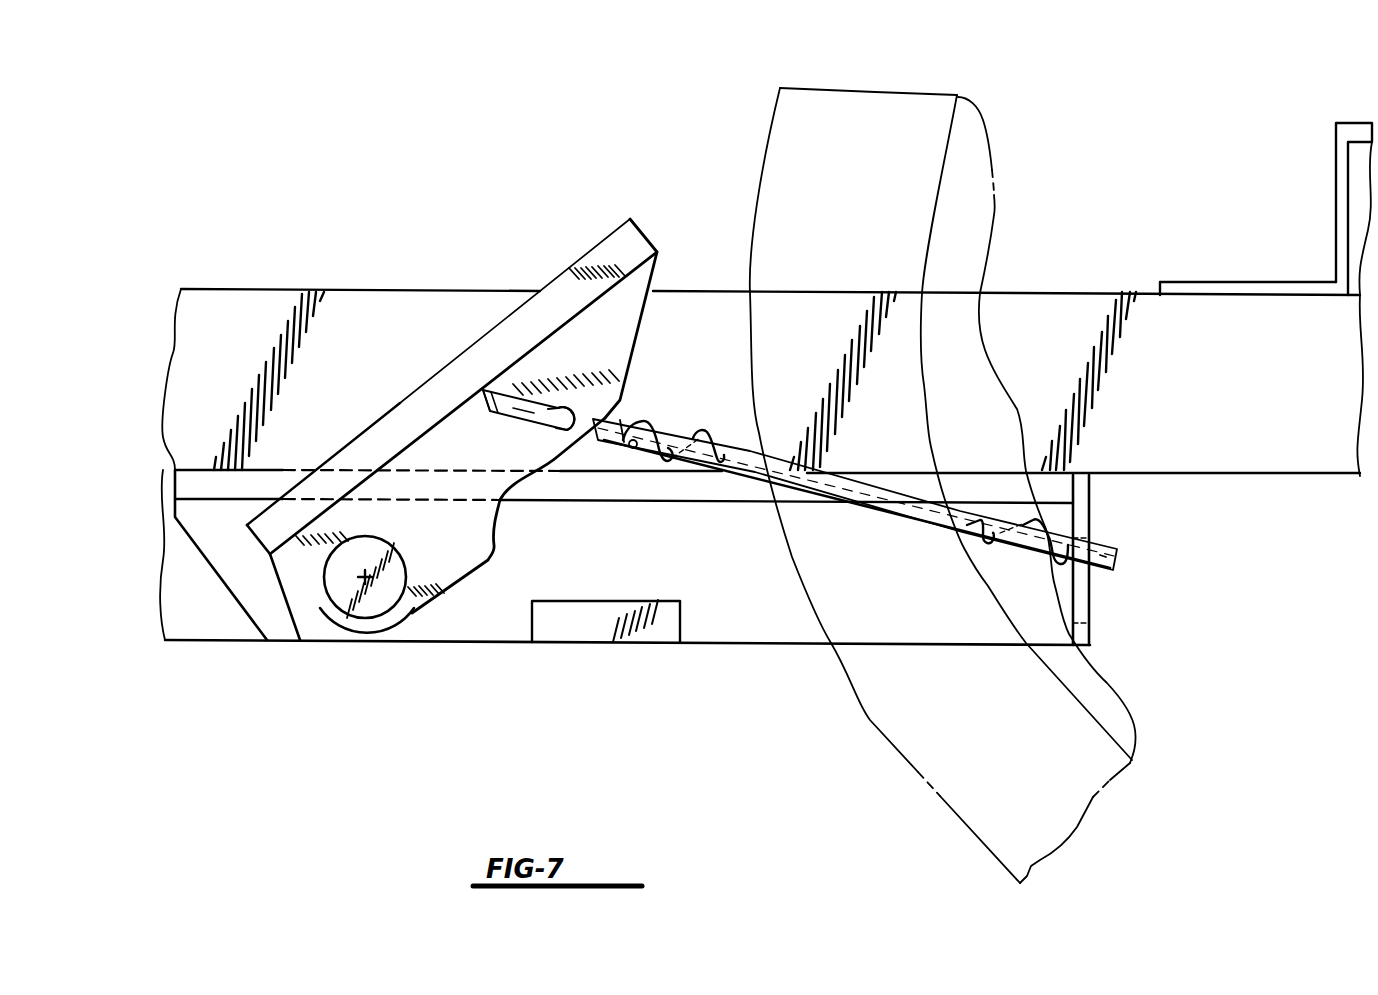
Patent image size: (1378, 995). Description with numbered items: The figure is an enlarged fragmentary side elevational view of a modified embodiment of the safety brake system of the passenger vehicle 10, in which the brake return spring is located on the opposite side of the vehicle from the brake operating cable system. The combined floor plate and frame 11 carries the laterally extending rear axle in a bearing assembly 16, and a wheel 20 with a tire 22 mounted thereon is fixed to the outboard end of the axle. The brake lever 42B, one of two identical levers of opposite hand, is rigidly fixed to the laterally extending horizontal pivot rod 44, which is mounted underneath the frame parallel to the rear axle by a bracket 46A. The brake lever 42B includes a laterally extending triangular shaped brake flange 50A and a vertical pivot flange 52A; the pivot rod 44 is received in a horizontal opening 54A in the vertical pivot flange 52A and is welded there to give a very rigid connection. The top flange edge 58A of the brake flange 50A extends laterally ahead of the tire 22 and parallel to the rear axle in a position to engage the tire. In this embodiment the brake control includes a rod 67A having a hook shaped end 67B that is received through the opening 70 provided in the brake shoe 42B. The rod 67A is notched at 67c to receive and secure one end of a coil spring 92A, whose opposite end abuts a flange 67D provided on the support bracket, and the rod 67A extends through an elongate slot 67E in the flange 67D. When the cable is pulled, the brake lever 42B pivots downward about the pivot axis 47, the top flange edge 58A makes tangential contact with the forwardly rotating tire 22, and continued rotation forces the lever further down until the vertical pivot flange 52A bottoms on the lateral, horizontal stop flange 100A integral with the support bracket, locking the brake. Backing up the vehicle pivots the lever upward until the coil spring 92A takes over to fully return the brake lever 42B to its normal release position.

The passenger vehicle 10 is at (742, 302).
The combined floor plate and frame 11 is at (318, 289).
The bearing assembly 16 is at (1338, 173).
The wheel 20 is at (942, 155).
The tire 22 is at (770, 113).
The brake lever 42B is at (586, 235).
The pivot rod 44 is at (352, 600).
The bracket 46A is at (190, 575).
The pivot axis 47 is at (373, 590).
The brake flange 50A is at (470, 426).
The vertical pivot flange 52A is at (302, 578).
The horizontal opening 54A is at (412, 613).
The top flange edge 58A is at (646, 237).
The rod 67A is at (855, 407).
The hook shaped end 67B is at (528, 305).
The notch 67c is at (630, 420).
The flange 67D is at (1085, 513).
The elongate slot 67E is at (1097, 595).
The opening 70 is at (552, 416).
The coil spring 92A is at (722, 447).
The stop flange 100A is at (662, 628).